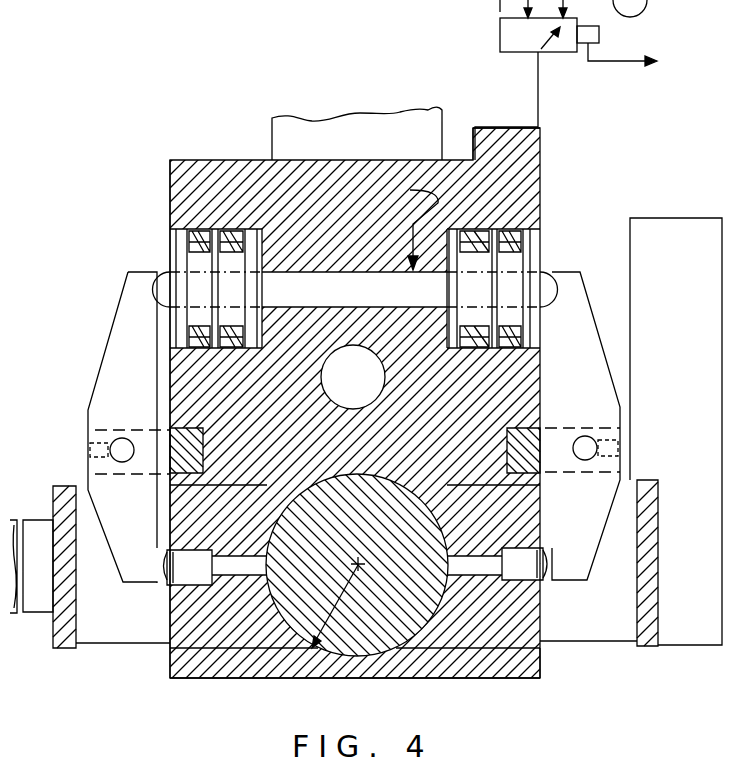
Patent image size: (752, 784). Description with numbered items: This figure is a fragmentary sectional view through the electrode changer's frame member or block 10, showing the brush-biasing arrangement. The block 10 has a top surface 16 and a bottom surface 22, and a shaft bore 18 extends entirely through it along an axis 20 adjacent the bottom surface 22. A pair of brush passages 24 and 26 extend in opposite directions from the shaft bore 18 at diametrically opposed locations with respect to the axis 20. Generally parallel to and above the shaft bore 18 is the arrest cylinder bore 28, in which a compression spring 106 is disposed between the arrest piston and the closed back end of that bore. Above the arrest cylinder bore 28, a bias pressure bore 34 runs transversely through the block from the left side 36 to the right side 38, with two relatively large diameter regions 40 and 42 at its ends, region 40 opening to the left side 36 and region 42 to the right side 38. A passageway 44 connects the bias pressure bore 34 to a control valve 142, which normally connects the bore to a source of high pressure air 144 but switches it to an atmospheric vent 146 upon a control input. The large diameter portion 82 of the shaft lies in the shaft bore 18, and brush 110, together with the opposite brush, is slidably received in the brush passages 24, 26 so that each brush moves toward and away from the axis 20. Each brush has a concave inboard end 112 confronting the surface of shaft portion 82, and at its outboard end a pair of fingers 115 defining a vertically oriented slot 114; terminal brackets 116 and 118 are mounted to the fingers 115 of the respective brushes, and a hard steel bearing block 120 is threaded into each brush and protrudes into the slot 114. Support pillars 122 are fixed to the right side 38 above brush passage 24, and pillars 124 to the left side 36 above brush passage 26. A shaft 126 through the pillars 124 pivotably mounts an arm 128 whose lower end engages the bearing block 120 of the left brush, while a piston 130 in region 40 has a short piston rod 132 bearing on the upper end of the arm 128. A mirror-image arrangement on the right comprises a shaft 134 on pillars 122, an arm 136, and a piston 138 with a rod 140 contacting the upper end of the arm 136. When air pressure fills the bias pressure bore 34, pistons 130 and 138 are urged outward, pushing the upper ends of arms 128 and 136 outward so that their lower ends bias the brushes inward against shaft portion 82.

The block 10 is at (545, 187).
The top surface 16 is at (522, 160).
The shaft bore 18 is at (385, 656).
The axis 20 is at (308, 650).
The bottom surface 22 is at (503, 679).
The brush passage 24 is at (510, 650).
The brush passage 26 is at (237, 652).
The arrest cylinder bore 28 is at (386, 375).
The bias pressure bore 34 is at (272, 228).
The left side 36 is at (170, 190).
The right side 38 is at (540, 166).
The large diameter region 40 is at (213, 229).
The large diameter region 42 is at (513, 223).
The passageway 44 is at (413, 224).
The large diameter portion 82 is at (340, 656).
The compression spring 106 is at (188, 643).
The brush 110 is at (528, 643).
The inboard end 112 is at (425, 630).
The slot 114 is at (100, 636).
The fingers 115 is at (163, 583).
The terminal bracket 116 is at (40, 605).
The terminal bracket 118 is at (680, 646).
The bearing block 120 is at (192, 549).
The support pillars 122 is at (547, 432).
The support pillars 124 is at (160, 440).
The shaft 126 is at (110, 447).
The arm 128 is at (122, 318).
The piston 130 is at (190, 260).
The piston rod 132 is at (160, 284).
The shaft 134 is at (583, 444).
The arm 136 is at (573, 291).
The piston 138 is at (518, 256).
The rod 140 is at (543, 282).
The control valve 142 is at (568, 52).
The source of high pressure air 144 is at (645, 10).
The atmospheric vent 146 is at (500, 0).